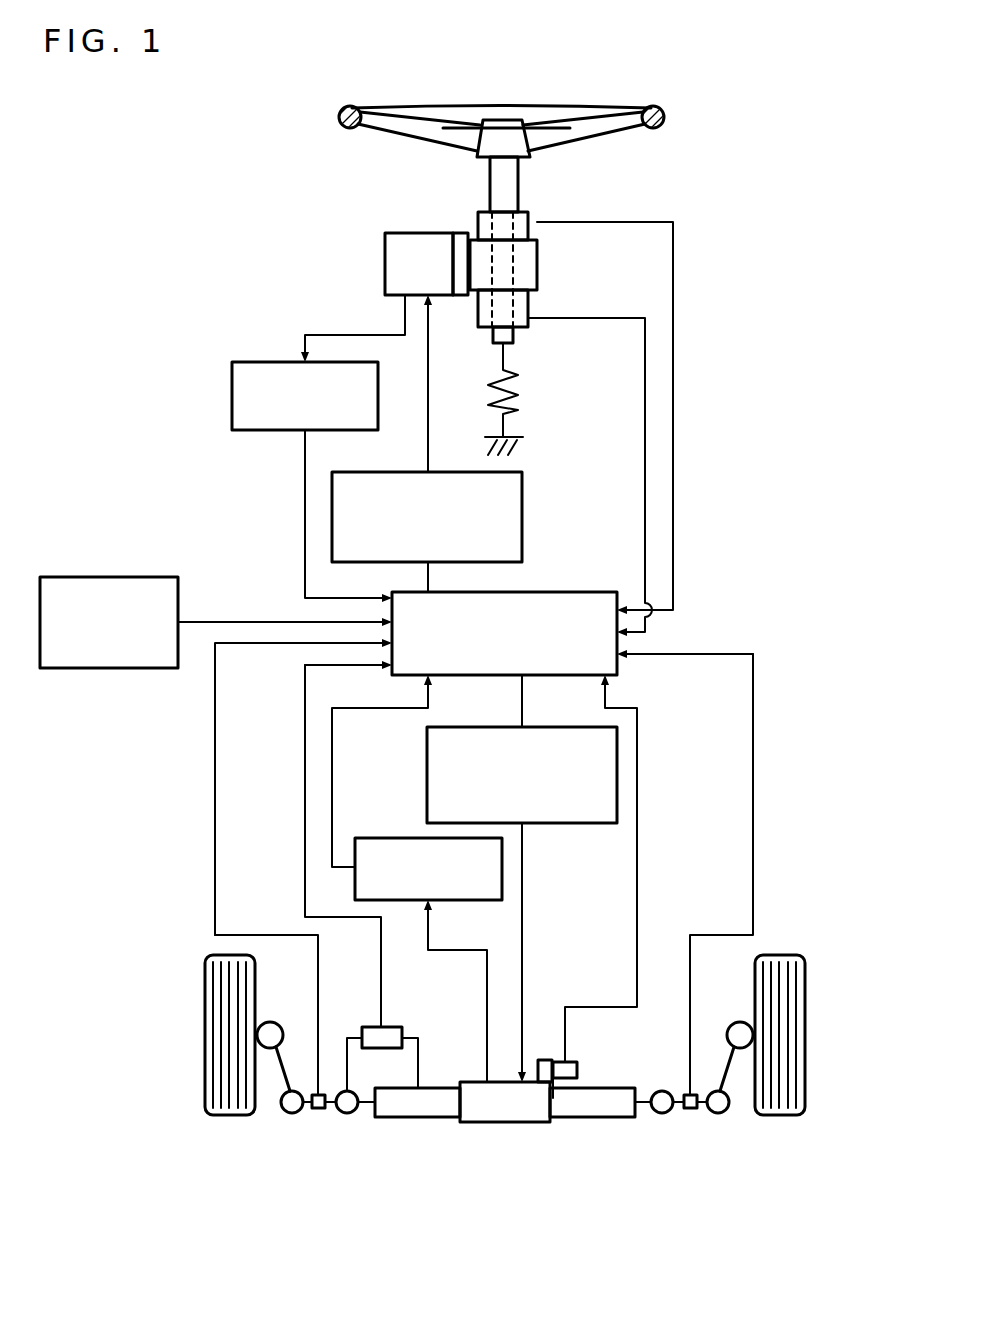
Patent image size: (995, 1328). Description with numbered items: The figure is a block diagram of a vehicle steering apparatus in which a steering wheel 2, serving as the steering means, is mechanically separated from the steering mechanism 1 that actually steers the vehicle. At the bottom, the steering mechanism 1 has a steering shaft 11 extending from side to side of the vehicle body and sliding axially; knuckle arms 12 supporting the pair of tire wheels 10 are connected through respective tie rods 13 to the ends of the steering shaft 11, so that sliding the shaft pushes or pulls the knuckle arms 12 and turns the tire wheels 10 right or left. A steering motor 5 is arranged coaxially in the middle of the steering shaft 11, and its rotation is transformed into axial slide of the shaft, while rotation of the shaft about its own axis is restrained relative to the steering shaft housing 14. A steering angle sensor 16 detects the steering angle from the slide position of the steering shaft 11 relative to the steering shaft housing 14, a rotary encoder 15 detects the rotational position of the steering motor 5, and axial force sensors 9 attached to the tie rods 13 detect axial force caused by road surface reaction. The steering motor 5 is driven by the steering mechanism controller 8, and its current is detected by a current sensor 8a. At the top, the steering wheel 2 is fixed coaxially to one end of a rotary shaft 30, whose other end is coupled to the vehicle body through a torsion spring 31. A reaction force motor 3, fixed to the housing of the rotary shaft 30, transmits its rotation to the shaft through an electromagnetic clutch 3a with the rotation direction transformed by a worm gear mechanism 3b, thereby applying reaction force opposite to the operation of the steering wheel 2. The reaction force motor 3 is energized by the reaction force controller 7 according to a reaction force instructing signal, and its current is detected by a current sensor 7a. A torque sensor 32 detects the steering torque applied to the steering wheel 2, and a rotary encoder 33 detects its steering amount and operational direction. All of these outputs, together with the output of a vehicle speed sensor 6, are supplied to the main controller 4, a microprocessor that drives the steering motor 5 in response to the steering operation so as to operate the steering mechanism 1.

The steering mechanism 1 is at (537, 1160).
The steering wheel 2 is at (340, 117).
The reaction force motor 3 is at (385, 265).
The electromagnetic clutch 3a is at (461, 298).
The worm gear mechanism 3b is at (537, 262).
The rotary shaft 30 is at (518, 180).
The torsion spring 31 is at (518, 400).
The torque sensor 32 is at (478, 218).
The rotary encoder 33 is at (528, 328).
The main controller 4 is at (505, 592).
The steering motor 5 is at (505, 1122).
The vehicle speed sensor 6 is at (90, 577).
The reaction force controller 7 is at (393, 472).
The current sensor 7a is at (258, 362).
The steering mechanism controller 8 is at (560, 824).
The current sensor 8a is at (396, 838).
The axial force sensor 9 is at (310, 1095).
The tire wheel for steering 10 is at (228, 1117).
The steering shaft 11 is at (367, 1113).
The knuckle arm 12 is at (281, 1073).
The tie rod 13 is at (305, 1108).
The steering shaft housing 14 is at (406, 1118).
The rotary encoder 15 is at (565, 1062).
The steering angle sensor 16 is at (396, 1027).